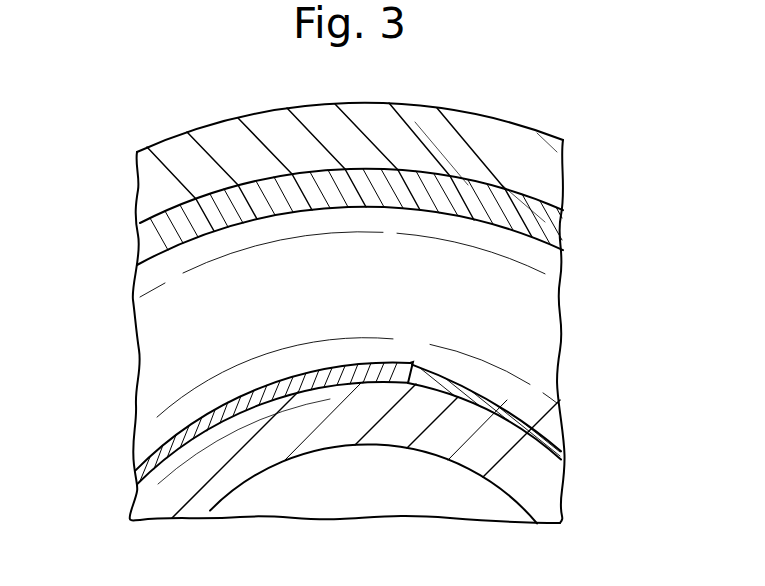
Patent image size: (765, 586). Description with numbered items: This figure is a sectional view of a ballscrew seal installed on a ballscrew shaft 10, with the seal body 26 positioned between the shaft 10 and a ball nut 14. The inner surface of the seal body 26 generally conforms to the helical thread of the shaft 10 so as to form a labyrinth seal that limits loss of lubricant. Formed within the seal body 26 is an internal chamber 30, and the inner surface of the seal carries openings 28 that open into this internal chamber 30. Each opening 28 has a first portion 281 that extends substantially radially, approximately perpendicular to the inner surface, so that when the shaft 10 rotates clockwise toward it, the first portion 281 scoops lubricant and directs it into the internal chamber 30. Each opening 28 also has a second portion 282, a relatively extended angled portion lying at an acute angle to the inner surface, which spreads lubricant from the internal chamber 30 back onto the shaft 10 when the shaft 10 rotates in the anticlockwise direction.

The ballscrew shaft 10 is at (545, 492).
The ball nut 14 is at (503, 137).
The seal body 26 is at (140, 234).
The openings 28 is at (346, 380).
The internal chamber 30 is at (540, 330).
The first portion 281 is at (393, 358).
The second portion 282 is at (230, 401).